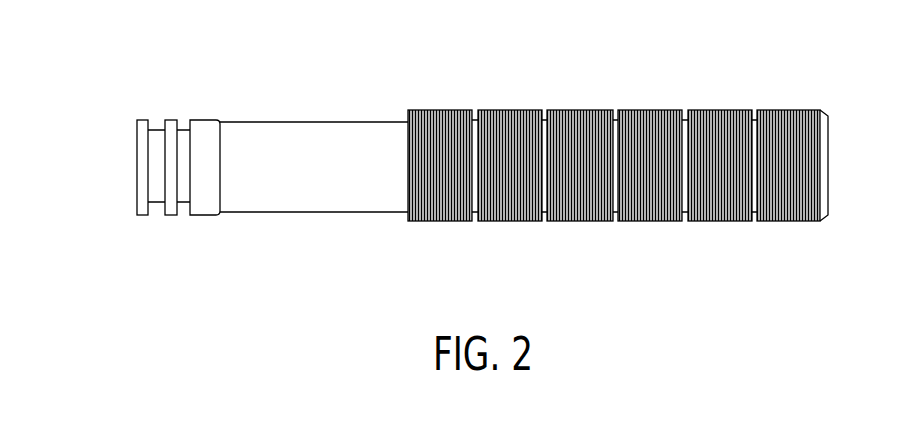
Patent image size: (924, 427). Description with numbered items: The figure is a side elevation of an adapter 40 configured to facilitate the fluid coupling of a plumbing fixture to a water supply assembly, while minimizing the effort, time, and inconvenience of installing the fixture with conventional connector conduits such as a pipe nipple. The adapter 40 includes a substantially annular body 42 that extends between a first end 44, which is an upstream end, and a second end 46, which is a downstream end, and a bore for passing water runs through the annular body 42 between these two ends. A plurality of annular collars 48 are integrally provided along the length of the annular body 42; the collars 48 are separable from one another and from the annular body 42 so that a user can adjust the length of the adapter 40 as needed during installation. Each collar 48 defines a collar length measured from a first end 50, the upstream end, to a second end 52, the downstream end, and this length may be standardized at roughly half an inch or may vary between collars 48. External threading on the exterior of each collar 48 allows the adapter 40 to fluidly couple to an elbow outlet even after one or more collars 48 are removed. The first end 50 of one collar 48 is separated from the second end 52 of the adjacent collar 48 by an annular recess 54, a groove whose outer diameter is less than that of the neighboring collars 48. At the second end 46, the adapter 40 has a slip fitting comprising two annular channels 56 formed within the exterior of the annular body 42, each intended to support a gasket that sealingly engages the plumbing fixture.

The adapter 40 is at (482, 162).
The annular body 42 is at (315, 133).
The first end 44 is at (833, 160).
The second end 46 is at (141, 128).
The annular collars 48 is at (614, 164).
The first end of collar 50 is at (743, 108).
The second end of collar 52 is at (688, 101).
The annular recess 54 is at (615, 111).
The annular channels 56 is at (183, 124).